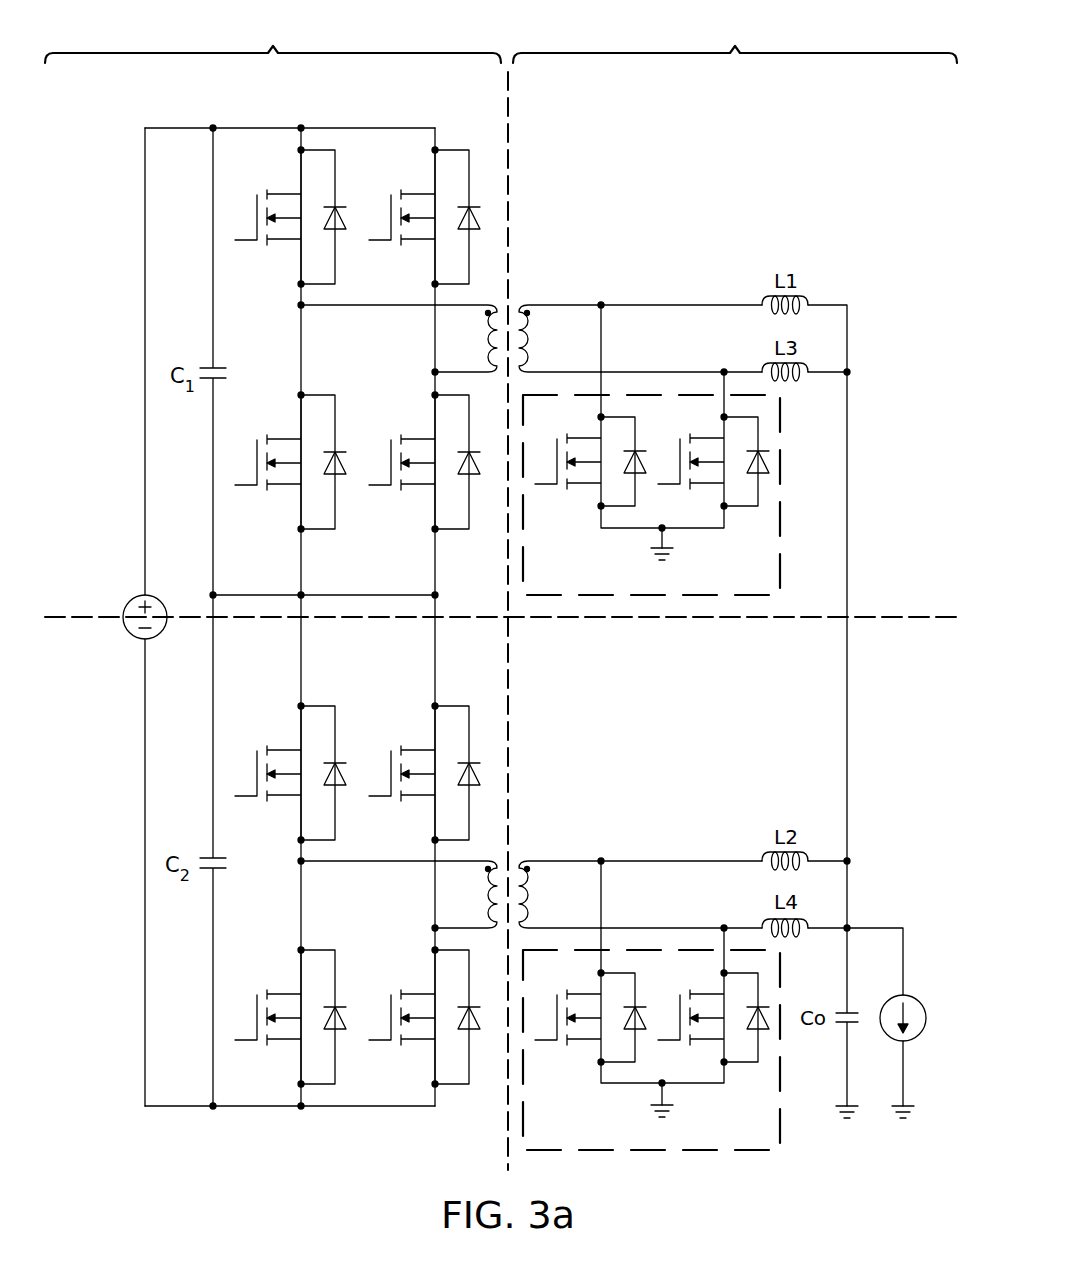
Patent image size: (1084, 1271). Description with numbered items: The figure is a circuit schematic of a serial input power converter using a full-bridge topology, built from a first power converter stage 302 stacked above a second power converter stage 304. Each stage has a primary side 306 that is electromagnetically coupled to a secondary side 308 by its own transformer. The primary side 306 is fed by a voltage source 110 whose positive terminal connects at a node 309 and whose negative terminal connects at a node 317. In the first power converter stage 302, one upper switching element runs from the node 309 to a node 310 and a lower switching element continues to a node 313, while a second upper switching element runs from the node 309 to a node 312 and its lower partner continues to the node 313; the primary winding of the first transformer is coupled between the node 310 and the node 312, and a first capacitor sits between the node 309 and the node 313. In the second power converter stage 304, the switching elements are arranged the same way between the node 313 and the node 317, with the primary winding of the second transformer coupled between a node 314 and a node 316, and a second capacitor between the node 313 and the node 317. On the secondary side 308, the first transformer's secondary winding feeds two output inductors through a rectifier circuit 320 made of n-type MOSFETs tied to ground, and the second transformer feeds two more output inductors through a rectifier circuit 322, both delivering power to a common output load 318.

The primary side 306 is at (273, 40).
The secondary side 308 is at (735, 40).
The first power converter stage 302 is at (128, 338).
The second power converter stage 304 is at (128, 895).
The node 309 is at (299, 122).
The node 310 is at (298, 304).
The node 312 is at (432, 369).
The node 313 is at (299, 591).
The node 314 is at (297, 863).
The node 316 is at (432, 930).
The node 317 is at (299, 1115).
The voltage source 110 is at (138, 641).
The output load 318 is at (912, 1040).
The rectifier circuit 320 is at (747, 574).
The rectifier circuit 322 is at (747, 1130).